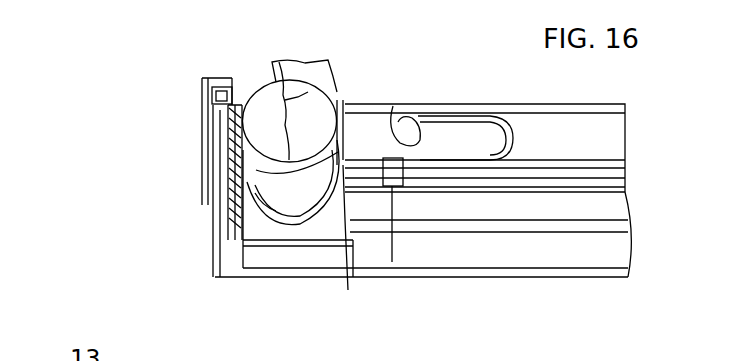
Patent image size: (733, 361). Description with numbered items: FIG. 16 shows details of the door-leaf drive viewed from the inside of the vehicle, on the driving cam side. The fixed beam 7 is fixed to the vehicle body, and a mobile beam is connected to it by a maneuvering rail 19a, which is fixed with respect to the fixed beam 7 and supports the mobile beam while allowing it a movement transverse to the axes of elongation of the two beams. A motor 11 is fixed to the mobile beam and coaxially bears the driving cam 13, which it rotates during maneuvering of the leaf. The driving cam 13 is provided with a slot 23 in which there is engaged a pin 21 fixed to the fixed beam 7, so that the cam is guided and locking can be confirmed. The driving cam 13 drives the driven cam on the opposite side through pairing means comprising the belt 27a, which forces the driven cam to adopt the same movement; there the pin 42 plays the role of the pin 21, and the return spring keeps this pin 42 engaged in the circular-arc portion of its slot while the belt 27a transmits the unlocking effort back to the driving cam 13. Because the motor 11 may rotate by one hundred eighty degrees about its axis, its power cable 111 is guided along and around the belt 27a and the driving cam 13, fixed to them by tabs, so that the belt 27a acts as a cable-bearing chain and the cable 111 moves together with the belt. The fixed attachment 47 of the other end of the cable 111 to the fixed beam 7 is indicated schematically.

The fixed beam 7 is at (540, 126).
The motor 11 is at (264, 76).
The driving cam 13 is at (245, 223).
The maneuvering rail 19a is at (213, 148).
The pin 21 is at (242, 176).
The slot 23 is at (240, 203).
The belt 27a is at (483, 240).
The pin 42 is at (392, 262).
The fixed attachment 47 is at (396, 130).
The power cable 111 is at (348, 290).